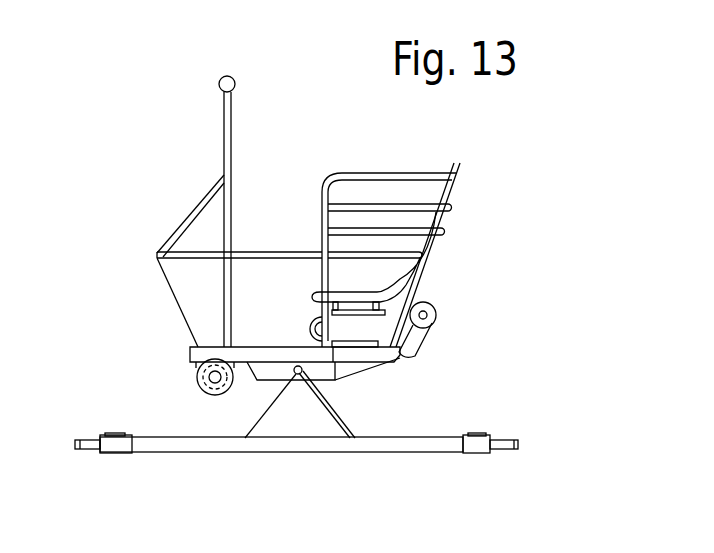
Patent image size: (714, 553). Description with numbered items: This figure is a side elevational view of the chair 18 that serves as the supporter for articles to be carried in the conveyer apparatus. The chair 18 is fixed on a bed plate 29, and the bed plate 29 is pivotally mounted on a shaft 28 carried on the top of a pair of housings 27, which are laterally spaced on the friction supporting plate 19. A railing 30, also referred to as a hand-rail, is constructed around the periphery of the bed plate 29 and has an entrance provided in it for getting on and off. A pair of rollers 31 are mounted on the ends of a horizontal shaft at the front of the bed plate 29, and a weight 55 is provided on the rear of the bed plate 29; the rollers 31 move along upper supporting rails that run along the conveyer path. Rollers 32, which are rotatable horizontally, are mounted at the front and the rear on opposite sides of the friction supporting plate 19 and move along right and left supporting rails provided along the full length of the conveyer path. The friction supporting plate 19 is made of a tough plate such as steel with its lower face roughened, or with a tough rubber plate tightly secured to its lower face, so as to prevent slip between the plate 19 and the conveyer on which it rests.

The chair 18 is at (404, 278).
The friction supporting plate 19 is at (273, 448).
The housings 27 is at (333, 407).
The shaft 28 is at (343, 375).
The bed plate 29 is at (407, 356).
The railing 30 is at (270, 250).
The rollers 31 is at (197, 372).
The rollers 32 is at (130, 443).
The weight 55 is at (428, 303).